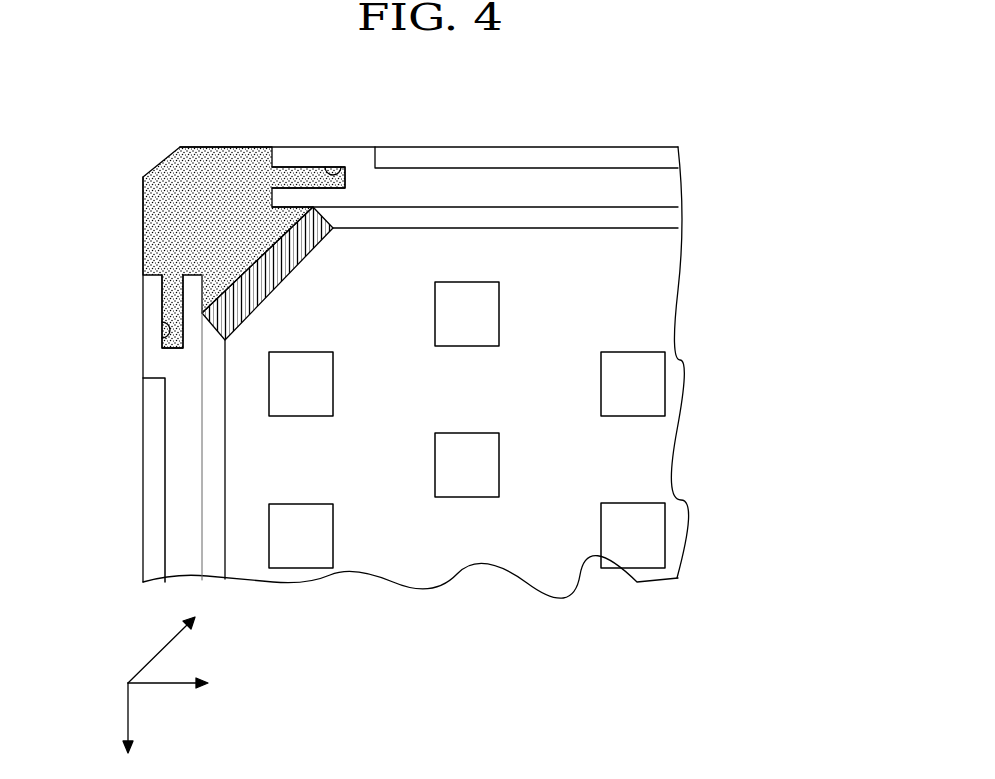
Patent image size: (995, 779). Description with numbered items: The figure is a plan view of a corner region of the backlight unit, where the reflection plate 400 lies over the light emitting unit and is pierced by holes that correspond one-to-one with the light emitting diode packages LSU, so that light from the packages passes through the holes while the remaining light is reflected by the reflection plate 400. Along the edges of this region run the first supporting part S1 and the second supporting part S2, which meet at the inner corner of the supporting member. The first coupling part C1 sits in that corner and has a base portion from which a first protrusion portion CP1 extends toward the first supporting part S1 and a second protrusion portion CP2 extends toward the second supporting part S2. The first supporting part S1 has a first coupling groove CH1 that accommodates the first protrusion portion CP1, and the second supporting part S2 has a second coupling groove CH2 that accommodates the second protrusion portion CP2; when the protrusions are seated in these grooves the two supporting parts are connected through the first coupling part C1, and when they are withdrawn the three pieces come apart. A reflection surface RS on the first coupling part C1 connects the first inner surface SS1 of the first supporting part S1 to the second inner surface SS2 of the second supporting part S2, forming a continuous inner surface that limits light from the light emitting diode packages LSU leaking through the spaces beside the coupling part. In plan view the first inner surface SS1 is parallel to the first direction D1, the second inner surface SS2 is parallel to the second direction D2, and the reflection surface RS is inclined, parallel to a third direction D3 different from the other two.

The reflection plate 400 is at (380, 297).
The first coupling part C1 is at (203, 155).
The second protrusion portion CP2 is at (297, 175).
The second coupling groove CH2 is at (339, 166).
The second supporting part S2 is at (555, 157).
The second inner surface SS2 is at (583, 218).
The light emitting diode package LSU is at (465, 297).
The reflection surface RS is at (270, 265).
The first protrusion portion CP1 is at (173, 297).
The first coupling groove CH1 is at (166, 327).
The first inner surface SS1 is at (211, 433).
The first supporting part S1 is at (153, 522).
The first direction D1 is at (128, 731).
The second direction D2 is at (183, 683).
The third direction D3 is at (171, 637).